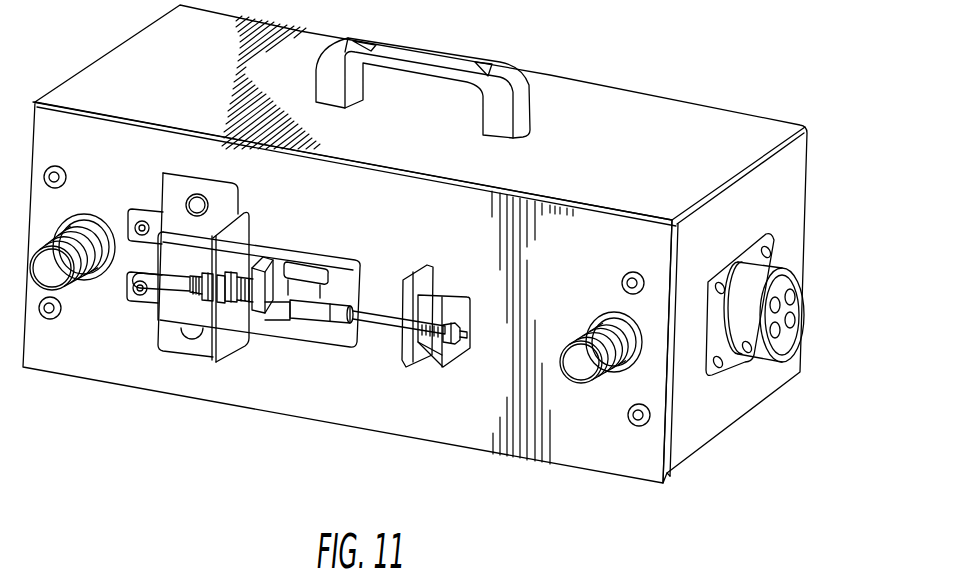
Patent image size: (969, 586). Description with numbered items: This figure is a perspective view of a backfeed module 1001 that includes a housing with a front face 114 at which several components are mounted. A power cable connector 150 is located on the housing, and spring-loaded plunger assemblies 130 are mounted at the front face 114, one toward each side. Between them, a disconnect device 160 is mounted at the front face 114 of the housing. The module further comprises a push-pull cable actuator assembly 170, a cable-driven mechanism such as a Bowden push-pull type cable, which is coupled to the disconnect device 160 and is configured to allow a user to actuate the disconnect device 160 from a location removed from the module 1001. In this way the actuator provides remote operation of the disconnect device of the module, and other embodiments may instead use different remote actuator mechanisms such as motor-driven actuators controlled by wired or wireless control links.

The enclosure housing 1001 is at (693, 117).
The front face 114 is at (135, 370).
The spring-loaded plunger assemblies 130 is at (57, 275).
The power cable connector 150 is at (812, 288).
The disconnect device 160 is at (258, 307).
The push-pull cable actuator assembly 170 is at (378, 318).